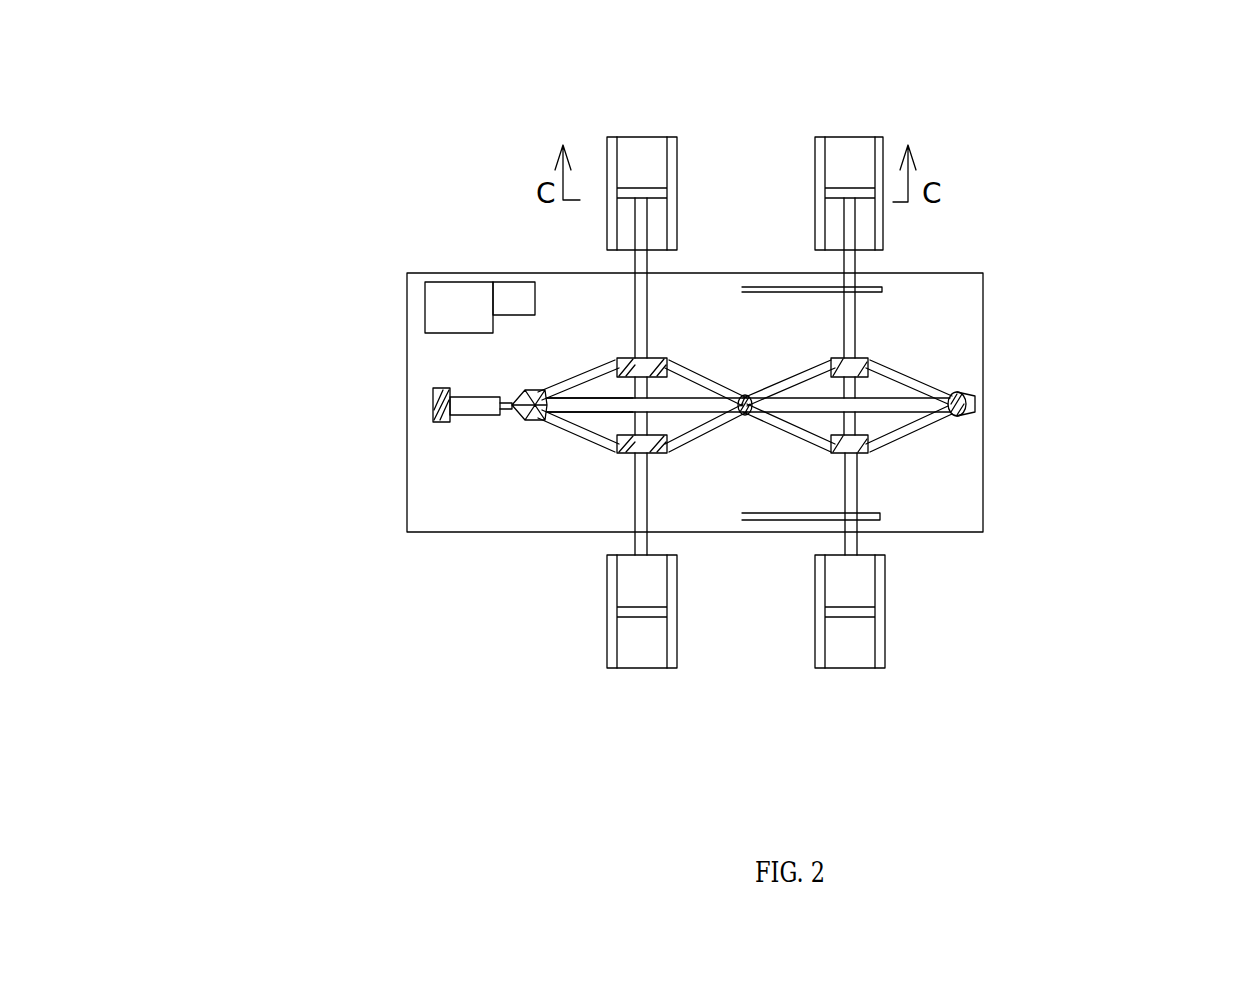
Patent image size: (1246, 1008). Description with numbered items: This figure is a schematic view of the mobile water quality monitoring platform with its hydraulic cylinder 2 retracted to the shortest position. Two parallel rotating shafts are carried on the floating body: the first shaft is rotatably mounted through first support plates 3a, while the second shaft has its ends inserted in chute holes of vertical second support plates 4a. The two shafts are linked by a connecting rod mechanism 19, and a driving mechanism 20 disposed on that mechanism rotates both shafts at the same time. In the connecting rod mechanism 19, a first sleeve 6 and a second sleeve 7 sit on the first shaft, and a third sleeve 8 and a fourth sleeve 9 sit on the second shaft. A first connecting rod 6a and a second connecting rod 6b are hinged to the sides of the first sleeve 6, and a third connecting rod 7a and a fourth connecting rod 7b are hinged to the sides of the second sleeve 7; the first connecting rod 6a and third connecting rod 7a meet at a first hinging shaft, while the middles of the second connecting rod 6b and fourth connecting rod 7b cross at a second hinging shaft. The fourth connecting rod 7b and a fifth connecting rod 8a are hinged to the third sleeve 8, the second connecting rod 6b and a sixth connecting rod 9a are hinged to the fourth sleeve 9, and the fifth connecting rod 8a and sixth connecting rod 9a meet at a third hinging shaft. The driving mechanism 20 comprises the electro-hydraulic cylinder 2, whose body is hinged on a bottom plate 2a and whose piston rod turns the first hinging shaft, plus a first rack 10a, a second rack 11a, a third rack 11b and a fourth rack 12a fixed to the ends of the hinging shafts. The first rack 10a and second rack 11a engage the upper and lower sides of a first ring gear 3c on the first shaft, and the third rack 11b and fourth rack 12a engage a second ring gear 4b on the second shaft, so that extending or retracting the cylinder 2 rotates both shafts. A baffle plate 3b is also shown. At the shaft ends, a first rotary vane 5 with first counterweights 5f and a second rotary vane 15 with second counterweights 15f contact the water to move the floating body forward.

The hydraulic cylinder 2 is at (470, 418).
The bottom plate 2a is at (412, 416).
The first support plate 3a is at (647, 287).
The baffle plate 3b is at (630, 390).
The first ring gear 3c is at (612, 416).
The second support plate 4a is at (880, 520).
The second ring gear 4b is at (885, 432).
The first rotary vane 5 is at (640, 668).
The first counterweight 5f is at (606, 137).
The first sleeve 6 is at (633, 422).
The first connecting rod 6a is at (560, 420).
The second connecting rod 6b is at (695, 430).
The second sleeve 7 is at (640, 352).
The third connecting rod 7a is at (565, 396).
The fourth connecting rod 7b is at (672, 364).
The third sleeve 8 is at (858, 458).
The fifth connecting rod 8a is at (870, 445).
The fourth sleeve 9 is at (860, 360).
The sixth connecting rod 9a is at (920, 383).
The first rack 10a is at (540, 418).
The second rack 11a is at (692, 424).
The third rack 11b is at (805, 365).
The fourth rack 12a is at (920, 405).
The second rotary vane 15 is at (863, 642).
The second counterweight 15f is at (882, 138).
The connecting rod mechanism 19 is at (749, 352).
The driving mechanism 20 is at (405, 409).